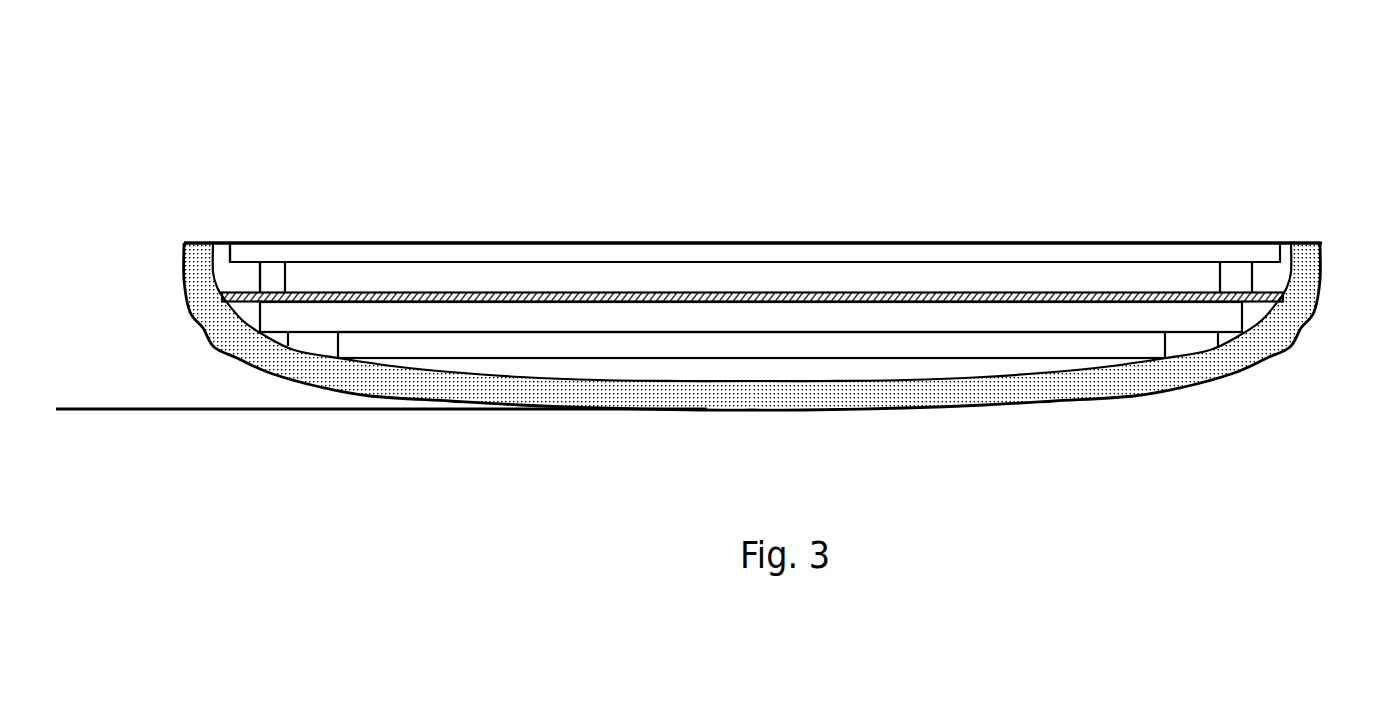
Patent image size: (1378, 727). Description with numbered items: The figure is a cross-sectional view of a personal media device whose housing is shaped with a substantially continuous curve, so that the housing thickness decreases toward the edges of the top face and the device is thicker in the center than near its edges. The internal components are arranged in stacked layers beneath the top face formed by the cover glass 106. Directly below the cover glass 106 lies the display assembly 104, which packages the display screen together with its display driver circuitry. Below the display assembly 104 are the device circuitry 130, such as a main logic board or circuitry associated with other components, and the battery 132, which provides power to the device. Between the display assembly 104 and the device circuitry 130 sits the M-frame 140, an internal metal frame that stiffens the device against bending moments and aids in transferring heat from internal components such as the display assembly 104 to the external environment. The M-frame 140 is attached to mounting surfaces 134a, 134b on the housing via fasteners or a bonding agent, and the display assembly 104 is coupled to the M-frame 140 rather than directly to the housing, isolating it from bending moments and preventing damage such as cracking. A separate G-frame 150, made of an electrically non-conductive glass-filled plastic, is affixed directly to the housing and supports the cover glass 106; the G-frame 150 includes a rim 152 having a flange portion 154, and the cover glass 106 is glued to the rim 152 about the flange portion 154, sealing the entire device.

The display assembly 104 is at (872, 290).
The cover glass 106 is at (783, 255).
The device circuitry 130 is at (860, 330).
The battery 132 is at (751, 346).
The mounting surface 134a is at (210, 327).
The mounting surface 134b is at (1290, 335).
The M-frame 140 is at (368, 298).
The G-frame 150 is at (223, 239).
The rim 152 is at (237, 246).
The flange portion 154 is at (260, 282).